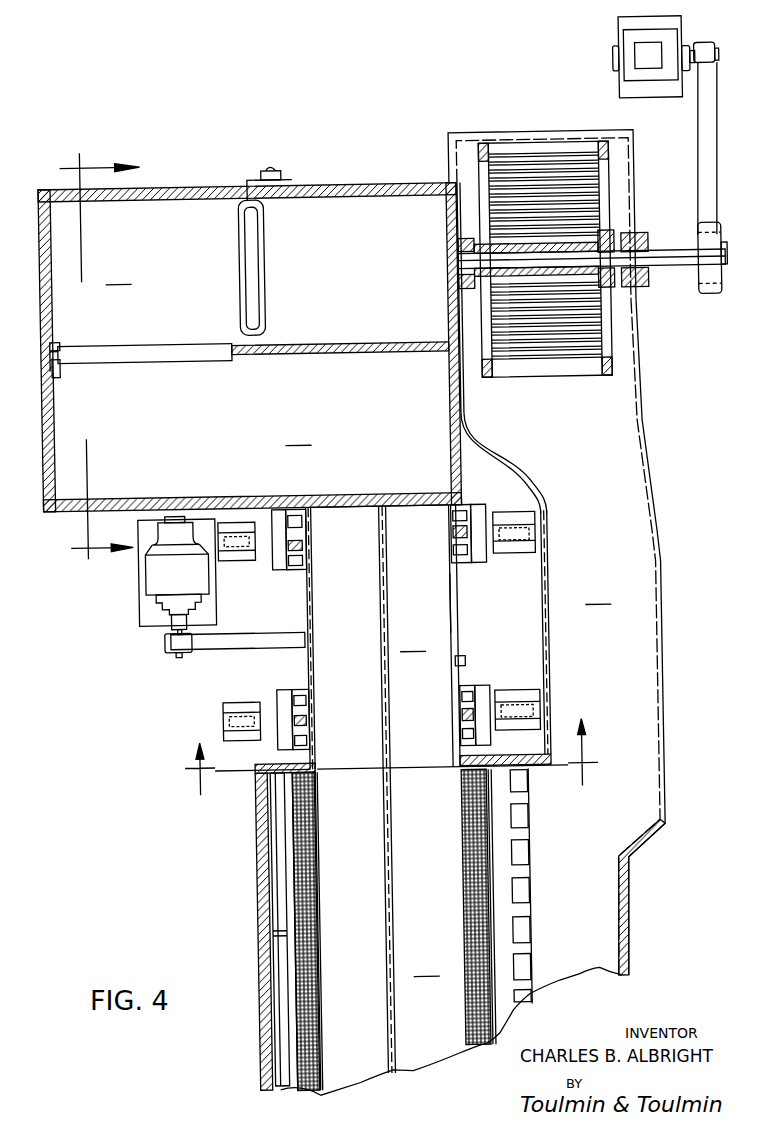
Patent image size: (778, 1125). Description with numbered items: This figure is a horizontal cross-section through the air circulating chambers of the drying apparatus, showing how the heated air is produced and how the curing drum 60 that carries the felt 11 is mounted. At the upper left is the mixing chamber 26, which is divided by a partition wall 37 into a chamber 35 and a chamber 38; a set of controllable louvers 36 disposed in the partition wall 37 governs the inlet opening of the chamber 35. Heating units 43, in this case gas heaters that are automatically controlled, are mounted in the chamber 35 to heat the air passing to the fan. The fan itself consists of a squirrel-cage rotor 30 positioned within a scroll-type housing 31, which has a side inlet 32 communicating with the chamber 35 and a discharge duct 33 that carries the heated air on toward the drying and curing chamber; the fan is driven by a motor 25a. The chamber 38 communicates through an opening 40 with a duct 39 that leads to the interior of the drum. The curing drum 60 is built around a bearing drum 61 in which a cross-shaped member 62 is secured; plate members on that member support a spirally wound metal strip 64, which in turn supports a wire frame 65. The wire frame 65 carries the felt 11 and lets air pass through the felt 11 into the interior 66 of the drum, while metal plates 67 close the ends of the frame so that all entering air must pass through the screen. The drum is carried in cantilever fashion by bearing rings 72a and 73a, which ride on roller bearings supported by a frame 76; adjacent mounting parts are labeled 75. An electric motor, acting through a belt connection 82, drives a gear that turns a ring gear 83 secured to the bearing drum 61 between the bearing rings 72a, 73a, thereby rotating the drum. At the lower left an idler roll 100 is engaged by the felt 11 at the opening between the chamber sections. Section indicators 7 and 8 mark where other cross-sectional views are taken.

The section line 7- 7 is at (391, 769).
The section line 8- 8 is at (92, 357).
The felt 11 is at (476, 908).
The motor 25a is at (630, 84).
The mixing chamber 26 is at (336, 186).
The squirrel-cage rotor 30 is at (570, 386).
The scroll-type housing 31 is at (641, 342).
The side inlet 32 is at (446, 288).
The discharge duct 33 is at (536, 637).
The chamber 35 is at (119, 273).
The controllable louvers 36 is at (205, 364).
The partition wall 37 is at (329, 358).
The chamber 38 is at (299, 434).
The duct 39 is at (383, 637).
The opening 40 is at (395, 508).
The heating units 43 is at (264, 282).
The curing drum 60 is at (474, 1002).
The bearing drum 61 is at (450, 622).
The cross-shaped member 62 is at (384, 716).
The spirally wound metal strip 64 is at (308, 880).
The wire frame 65 is at (305, 916).
The interior 66 is at (390, 873).
The metal plates 67 is at (310, 780).
The bearing ring 72a is at (478, 708).
The bearing ring 73a is at (470, 545).
The mounting plate 75 is at (474, 535).
The frame 76 is at (532, 534).
The belt connection 82 is at (250, 636).
The ring gear 83 is at (458, 665).
The idler roll 100 is at (268, 968).